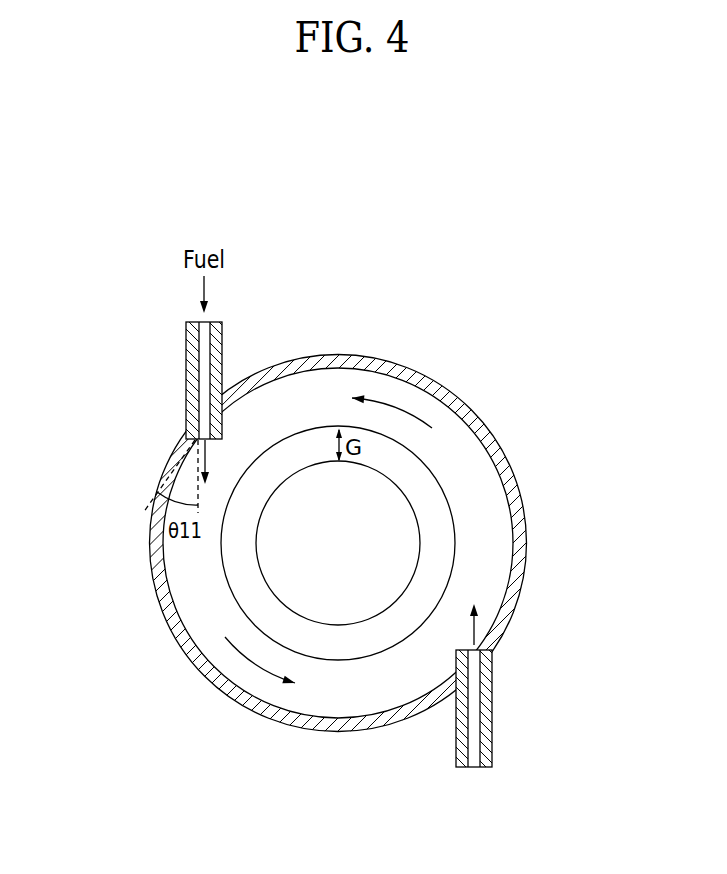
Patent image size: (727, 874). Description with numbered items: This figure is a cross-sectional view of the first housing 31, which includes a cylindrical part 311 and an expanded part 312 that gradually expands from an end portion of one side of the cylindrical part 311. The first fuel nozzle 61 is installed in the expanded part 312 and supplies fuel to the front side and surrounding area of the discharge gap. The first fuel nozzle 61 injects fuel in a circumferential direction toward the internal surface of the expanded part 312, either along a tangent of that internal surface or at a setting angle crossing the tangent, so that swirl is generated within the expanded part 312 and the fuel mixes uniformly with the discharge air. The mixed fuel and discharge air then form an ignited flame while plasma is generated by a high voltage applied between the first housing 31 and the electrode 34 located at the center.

The first housing 31 is at (363, 543).
The cylindrical part 311 is at (229, 581).
The expanded part 312 is at (185, 563).
The electrode 34 is at (335, 586).
The first fuel nozzle 61 is at (186, 352).